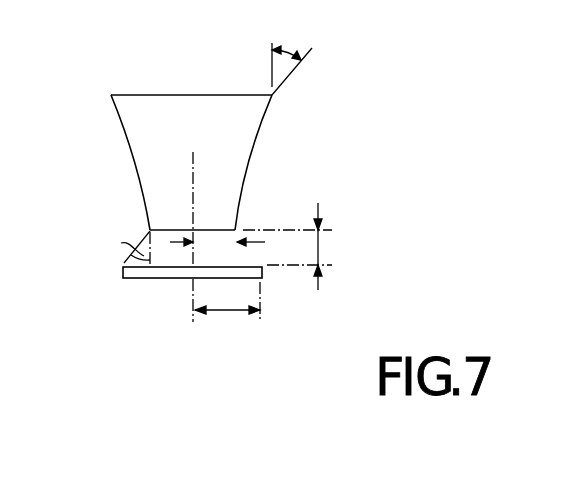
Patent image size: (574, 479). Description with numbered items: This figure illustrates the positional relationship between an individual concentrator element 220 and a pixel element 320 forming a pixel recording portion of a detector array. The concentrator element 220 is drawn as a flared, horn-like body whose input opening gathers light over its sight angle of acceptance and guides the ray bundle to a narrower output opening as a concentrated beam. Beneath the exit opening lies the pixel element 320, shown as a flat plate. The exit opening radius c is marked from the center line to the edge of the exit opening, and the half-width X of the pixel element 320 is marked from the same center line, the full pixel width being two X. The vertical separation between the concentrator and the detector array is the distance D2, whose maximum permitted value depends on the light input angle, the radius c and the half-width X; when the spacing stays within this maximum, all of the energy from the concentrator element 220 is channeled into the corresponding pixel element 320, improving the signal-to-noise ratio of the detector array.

The concentrator element 220 is at (168, 93).
The pixel element 320 is at (142, 280).
The exit opening radius C is at (217, 242).
The distance between the concentrator array and the detector array D2 is at (327, 246).
The half-width of the pixel element X is at (227, 312).